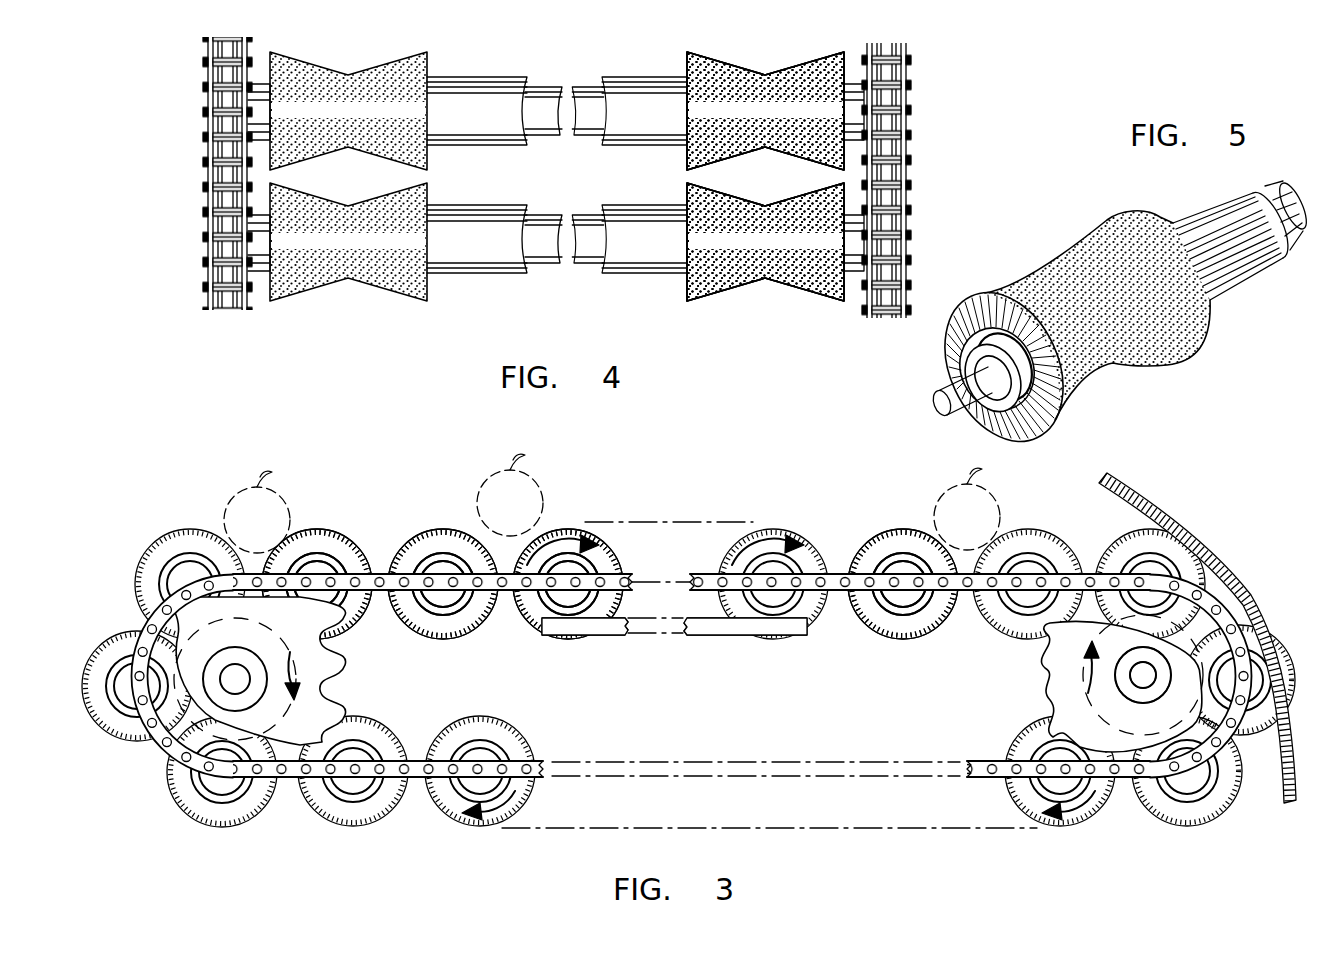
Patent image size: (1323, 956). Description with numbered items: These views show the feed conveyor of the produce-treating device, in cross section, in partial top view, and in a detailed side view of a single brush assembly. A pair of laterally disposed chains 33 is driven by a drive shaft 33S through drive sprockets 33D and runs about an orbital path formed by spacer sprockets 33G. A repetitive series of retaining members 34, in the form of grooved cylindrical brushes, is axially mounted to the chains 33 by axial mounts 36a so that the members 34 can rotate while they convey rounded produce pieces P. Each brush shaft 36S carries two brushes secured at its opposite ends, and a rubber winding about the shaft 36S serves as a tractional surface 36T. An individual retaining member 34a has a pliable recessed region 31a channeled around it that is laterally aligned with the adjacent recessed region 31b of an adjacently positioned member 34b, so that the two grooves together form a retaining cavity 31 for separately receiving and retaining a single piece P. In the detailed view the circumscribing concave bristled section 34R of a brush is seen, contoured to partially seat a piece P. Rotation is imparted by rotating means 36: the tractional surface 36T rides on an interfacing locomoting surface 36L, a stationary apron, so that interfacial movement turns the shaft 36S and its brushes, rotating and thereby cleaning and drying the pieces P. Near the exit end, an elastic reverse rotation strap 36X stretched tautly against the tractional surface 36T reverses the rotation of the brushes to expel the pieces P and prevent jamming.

In FIG. 4, the retaining cavity 31 is at (780, 188).
In FIG. 4, the pliable recessed region 31a is at (318, 70).
In FIG. 4, the adjacent recessed region 31b is at (752, 210).
In FIG. 4, the continuous conveyor chain 33 is at (205, 150).
In FIG. 3, the continuous conveyor chain 33 is at (690, 583).
In FIG. 3, the spacer sprocket 33G is at (340, 700).
In FIG. 3, the drive shaft 33S is at (1047, 692).
In FIG. 3, the drive sprocket 33D is at (1122, 723).
In FIG. 3, the retaining member 34 is at (452, 528).
In FIG. 4, the retaining member 34a is at (843, 163).
In FIG. 3, the retaining member 34a is at (404, 530).
In FIG. 4, the adjacently positioned retaining member 34b is at (336, 272).
In FIG. 5, the adjacently positioned retaining member 34b is at (1090, 265).
In FIG. 3, the adjacently positioned retaining member 34b is at (372, 519).
In FIG. 5, the recessed bristled region 34R is at (1130, 360).
In FIG. 3, the rotating means 36 is at (597, 638).
In FIG. 4, the axial mount 36a is at (909, 118).
In FIG. 3, the axial mount 36a is at (880, 552).
In FIG. 3, the interfacing locomoting surface 36L is at (697, 627).
In FIG. 4, the brush shaft 36S is at (588, 100).
In FIG. 5, the brush shaft 36S is at (934, 401).
In FIG. 4, the tractional surface 36T is at (476, 128).
In FIG. 5, the tractional surface 36T is at (1248, 262).
In FIG. 3, the reverse rotation strap 36X is at (1127, 500).
In FIG. 3, the produce piece P is at (230, 492).